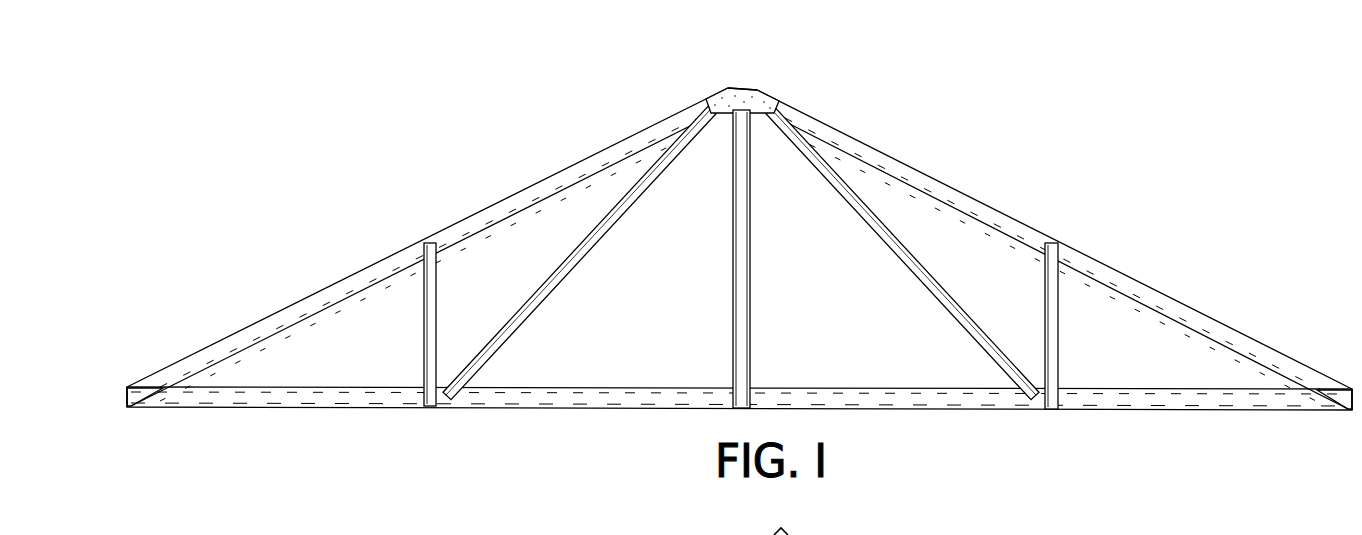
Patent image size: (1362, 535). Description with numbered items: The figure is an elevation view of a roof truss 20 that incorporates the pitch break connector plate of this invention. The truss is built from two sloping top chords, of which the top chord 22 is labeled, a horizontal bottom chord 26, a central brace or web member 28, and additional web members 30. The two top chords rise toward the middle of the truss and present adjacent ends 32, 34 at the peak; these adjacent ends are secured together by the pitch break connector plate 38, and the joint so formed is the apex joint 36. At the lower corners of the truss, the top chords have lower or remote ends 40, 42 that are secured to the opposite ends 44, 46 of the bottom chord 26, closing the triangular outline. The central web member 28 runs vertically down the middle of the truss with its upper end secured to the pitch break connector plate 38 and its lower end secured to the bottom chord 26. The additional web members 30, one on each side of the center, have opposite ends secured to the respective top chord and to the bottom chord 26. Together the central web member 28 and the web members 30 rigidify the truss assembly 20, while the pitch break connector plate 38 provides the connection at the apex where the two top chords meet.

The roof truss 20 is at (739, 236).
The top chord 22 is at (582, 173).
The bottom chord 26 is at (971, 401).
The central web member 28 is at (741, 321).
The web member 30 is at (436, 303).
The adjacent end 32 is at (709, 107).
The adjacent end 34 is at (774, 108).
The apex joint 36 is at (759, 80).
The pitch break connector plate 38 is at (741, 87).
The remote end 40 is at (157, 374).
The remote end 42 is at (1320, 376).
The end of bottom chord 44 is at (162, 398).
The end of bottom chord 46 is at (1326, 414).